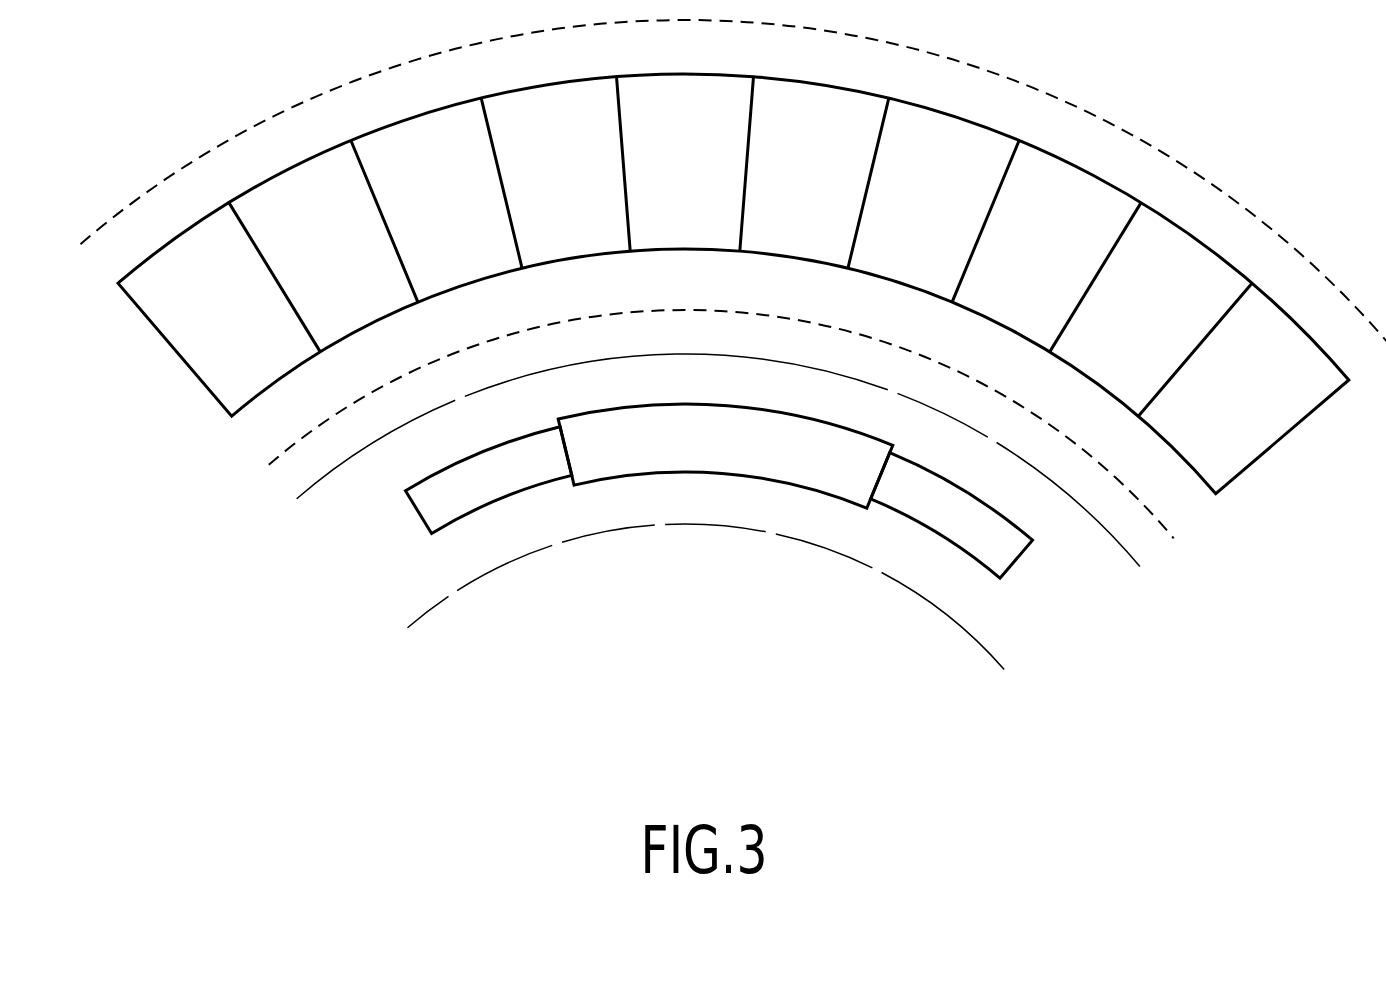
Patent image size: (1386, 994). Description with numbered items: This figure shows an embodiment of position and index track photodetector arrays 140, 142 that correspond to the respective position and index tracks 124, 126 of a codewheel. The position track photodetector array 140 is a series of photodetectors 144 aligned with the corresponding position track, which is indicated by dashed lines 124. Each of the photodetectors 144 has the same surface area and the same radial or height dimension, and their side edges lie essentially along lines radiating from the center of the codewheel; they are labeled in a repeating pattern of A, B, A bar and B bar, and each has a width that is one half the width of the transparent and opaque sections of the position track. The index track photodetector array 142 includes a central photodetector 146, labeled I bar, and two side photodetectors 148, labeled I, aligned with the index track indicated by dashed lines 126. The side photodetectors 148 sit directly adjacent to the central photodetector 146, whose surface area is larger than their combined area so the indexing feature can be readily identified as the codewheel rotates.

The position track 124 is at (1105, 122).
The index track 126 is at (1128, 550).
The position track photodetector array 140 is at (699, 284).
The index track photodetector array 142 is at (662, 521).
The photodetectors 144 is at (143, 365).
The central photodetector 146 is at (725, 456).
The side photodetectors 148 is at (387, 533).